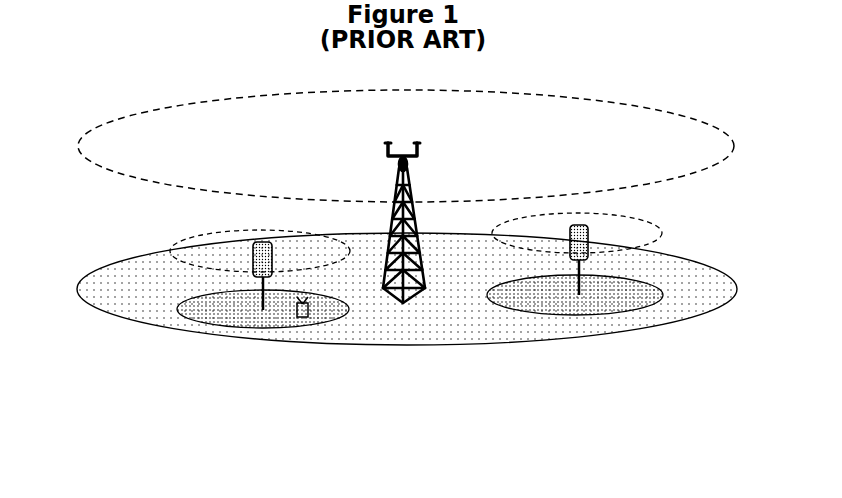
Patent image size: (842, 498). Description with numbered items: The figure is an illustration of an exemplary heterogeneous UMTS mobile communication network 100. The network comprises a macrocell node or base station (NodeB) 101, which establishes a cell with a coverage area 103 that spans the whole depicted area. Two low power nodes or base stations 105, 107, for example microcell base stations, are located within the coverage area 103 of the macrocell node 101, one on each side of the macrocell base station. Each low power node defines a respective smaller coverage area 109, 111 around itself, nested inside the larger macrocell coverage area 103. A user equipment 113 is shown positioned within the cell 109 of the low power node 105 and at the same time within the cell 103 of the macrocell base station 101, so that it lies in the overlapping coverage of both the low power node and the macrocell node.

The heterogeneous UMTS mobile communication network 100 is at (90, 330).
The macrocell node/base station (NodeB) 101 is at (413, 168).
The coverage area 103 is at (435, 322).
The low power node/base station 105 is at (253, 250).
The low power node/base station 107 is at (592, 229).
The coverage area 109 is at (240, 322).
The coverage area 111 is at (574, 302).
The user equipment 113 is at (312, 300).